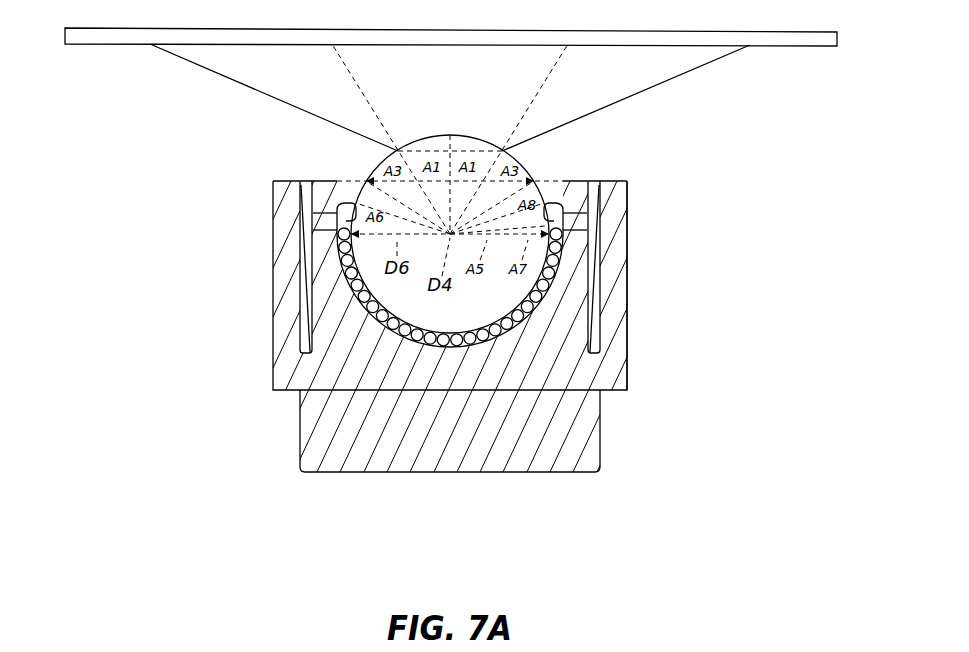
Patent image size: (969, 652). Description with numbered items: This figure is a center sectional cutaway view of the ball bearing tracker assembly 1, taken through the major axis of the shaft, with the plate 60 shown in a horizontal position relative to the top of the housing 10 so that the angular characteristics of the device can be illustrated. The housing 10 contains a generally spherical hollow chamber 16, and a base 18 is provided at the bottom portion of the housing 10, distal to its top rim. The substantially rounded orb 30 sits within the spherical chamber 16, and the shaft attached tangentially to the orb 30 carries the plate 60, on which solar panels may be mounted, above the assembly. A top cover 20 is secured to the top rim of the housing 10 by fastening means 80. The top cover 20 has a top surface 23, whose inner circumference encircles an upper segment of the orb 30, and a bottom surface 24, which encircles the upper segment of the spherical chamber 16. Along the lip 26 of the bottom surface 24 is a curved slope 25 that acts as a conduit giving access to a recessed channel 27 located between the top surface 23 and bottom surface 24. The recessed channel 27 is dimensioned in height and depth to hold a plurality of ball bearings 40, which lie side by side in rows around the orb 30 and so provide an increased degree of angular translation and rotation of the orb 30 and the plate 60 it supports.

The ball bearing tracker assembly 1 is at (160, 236).
The housing 10 is at (273, 340).
The spherical hollow chamber 16 is at (306, 298).
The base 18 is at (300, 430).
The top cover 20 is at (273, 197).
The top surface 23 is at (620, 183).
The bottom surface 24 is at (620, 262).
The curved slope 25 is at (313, 214).
The lip 26 is at (330, 243).
The recessed channel 27 is at (335, 190).
The substantially rounded orb 30 is at (535, 172).
The ball bearing 40 is at (560, 290).
The plate 60 is at (830, 47).
The fastening means 80 is at (620, 203).